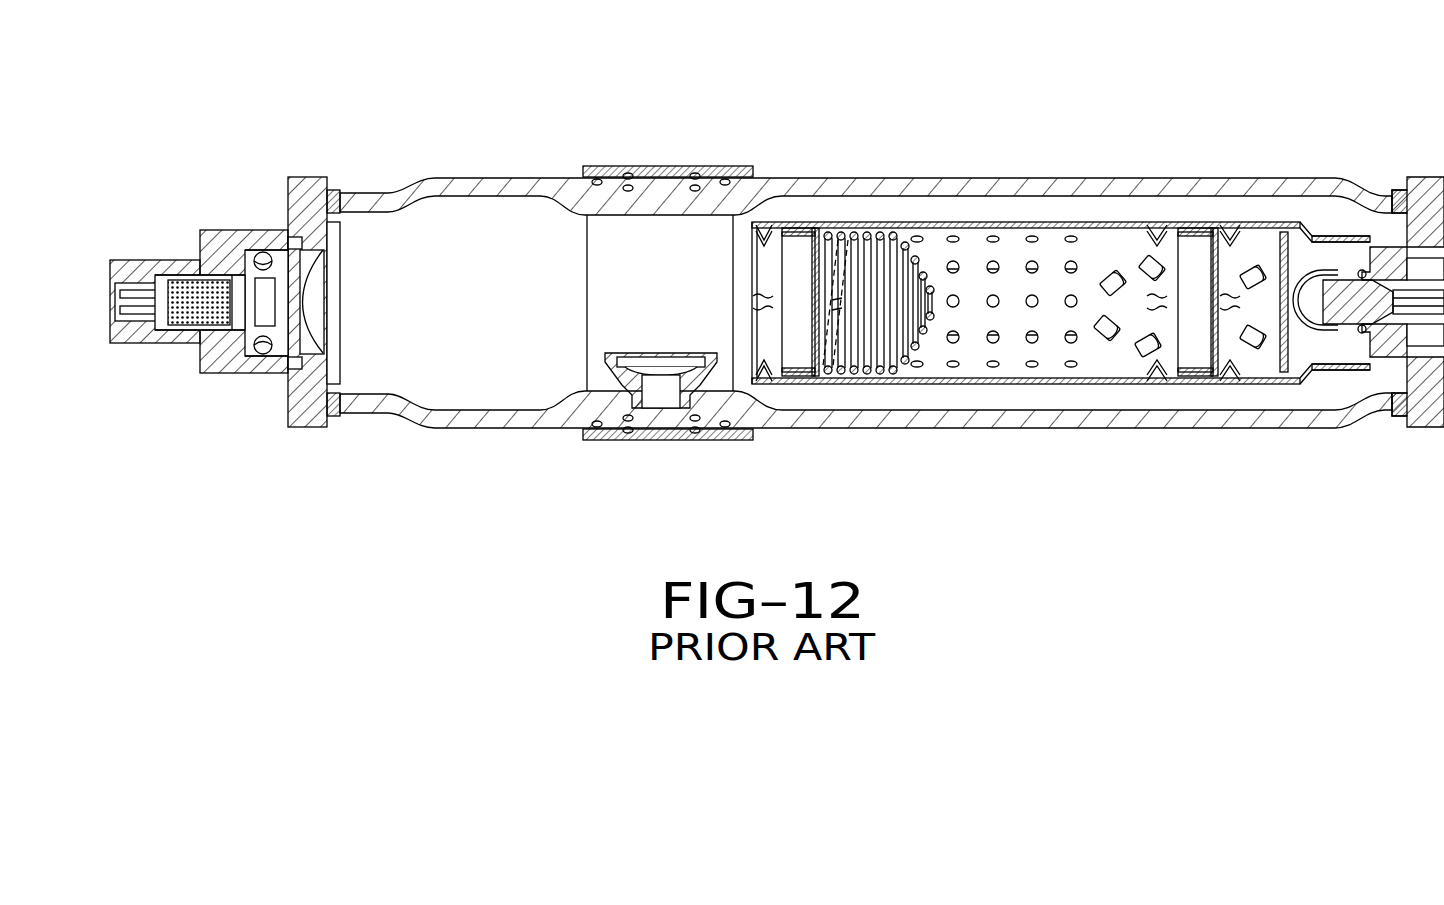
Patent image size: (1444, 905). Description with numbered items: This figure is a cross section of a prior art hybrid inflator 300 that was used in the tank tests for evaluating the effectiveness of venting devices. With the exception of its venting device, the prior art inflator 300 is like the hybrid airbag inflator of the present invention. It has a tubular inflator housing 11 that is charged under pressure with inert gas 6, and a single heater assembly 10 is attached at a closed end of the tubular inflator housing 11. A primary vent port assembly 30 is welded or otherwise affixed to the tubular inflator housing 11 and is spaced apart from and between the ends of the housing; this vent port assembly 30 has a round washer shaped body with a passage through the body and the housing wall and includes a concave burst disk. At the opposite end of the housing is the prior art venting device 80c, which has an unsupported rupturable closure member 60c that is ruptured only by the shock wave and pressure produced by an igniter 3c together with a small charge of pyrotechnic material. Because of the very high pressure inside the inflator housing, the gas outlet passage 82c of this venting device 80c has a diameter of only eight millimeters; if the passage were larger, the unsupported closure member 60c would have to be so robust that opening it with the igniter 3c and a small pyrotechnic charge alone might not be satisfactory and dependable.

The hybrid inflator 300 is at (873, 251).
The tubular inflator housing 11 is at (910, 428).
The heater assembly 10 is at (1092, 255).
The inert gas 6 is at (487, 222).
The primary vent port assembly 30 is at (712, 388).
The venting device 80c is at (222, 172).
The gas outlet passage 82c is at (327, 292).
The unsupported rupturable closure member 60c is at (306, 300).
The igniter 3c is at (180, 322).